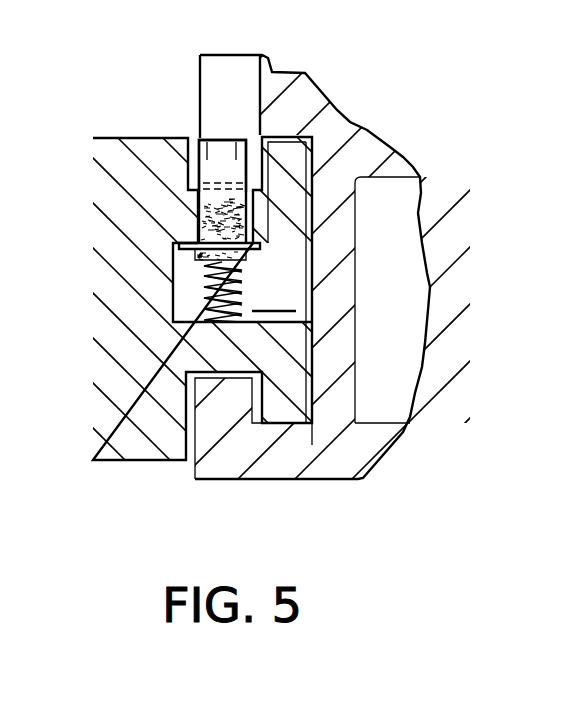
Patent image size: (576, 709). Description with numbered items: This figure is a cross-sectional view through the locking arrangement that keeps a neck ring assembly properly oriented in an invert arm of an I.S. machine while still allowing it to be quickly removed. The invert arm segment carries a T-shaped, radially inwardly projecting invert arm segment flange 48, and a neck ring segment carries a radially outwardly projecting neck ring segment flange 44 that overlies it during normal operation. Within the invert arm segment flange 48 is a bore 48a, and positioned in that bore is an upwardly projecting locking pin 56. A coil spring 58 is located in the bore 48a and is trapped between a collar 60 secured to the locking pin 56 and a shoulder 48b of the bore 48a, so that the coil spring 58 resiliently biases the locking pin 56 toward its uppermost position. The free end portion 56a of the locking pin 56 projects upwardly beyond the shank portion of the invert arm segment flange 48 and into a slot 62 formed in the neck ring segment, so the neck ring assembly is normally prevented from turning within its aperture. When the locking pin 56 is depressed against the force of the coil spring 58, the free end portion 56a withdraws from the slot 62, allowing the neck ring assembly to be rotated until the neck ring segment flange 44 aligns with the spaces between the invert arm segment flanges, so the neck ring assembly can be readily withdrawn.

The neck ring segment flange 44 is at (367, 130).
The invert arm segment flange 48 is at (95, 423).
The bore 48a is at (271, 297).
The shoulder 48b is at (172, 308).
The locking pin 56 is at (253, 167).
The free end portion 56a is at (213, 147).
The coil spring 58 is at (198, 281).
The collar 60 is at (280, 250).
The slot 62 is at (222, 75).